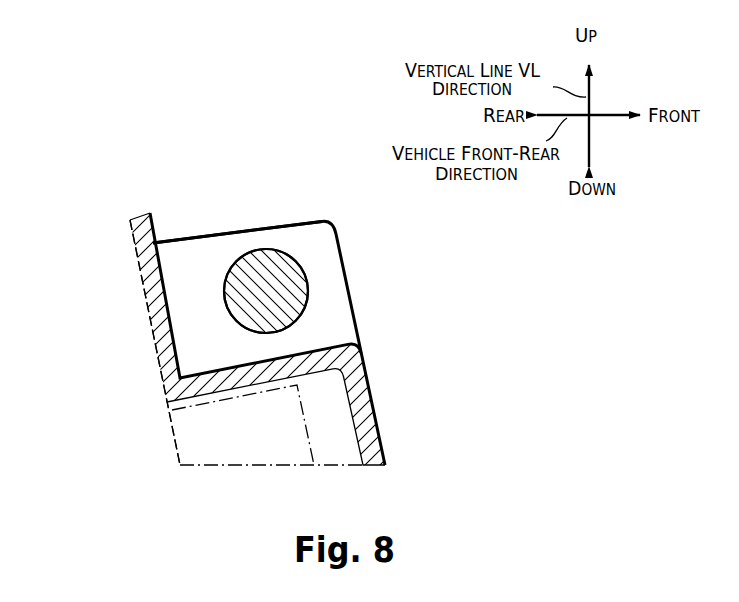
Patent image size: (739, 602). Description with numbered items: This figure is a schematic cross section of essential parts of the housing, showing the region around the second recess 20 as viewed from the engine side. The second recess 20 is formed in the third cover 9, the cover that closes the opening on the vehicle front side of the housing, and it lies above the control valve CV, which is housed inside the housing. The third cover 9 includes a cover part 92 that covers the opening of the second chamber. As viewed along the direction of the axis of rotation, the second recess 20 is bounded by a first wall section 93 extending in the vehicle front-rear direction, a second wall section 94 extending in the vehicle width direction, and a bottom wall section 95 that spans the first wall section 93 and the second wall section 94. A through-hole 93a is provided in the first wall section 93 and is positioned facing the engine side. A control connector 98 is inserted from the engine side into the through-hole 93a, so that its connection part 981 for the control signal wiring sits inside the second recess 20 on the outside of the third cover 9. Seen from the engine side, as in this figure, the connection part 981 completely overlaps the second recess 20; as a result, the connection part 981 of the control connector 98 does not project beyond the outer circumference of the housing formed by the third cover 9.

The third cover 9 is at (146, 219).
The second recess 20 is at (207, 292).
The cover part 92 is at (368, 415).
The first wall section 93 is at (333, 310).
The through-hole 93a is at (247, 262).
The second wall section 94 is at (163, 323).
The bottom wall section 95 is at (267, 374).
The control connector 98 is at (311, 278).
The connection part 981 is at (288, 262).
The control valve CV is at (171, 444).